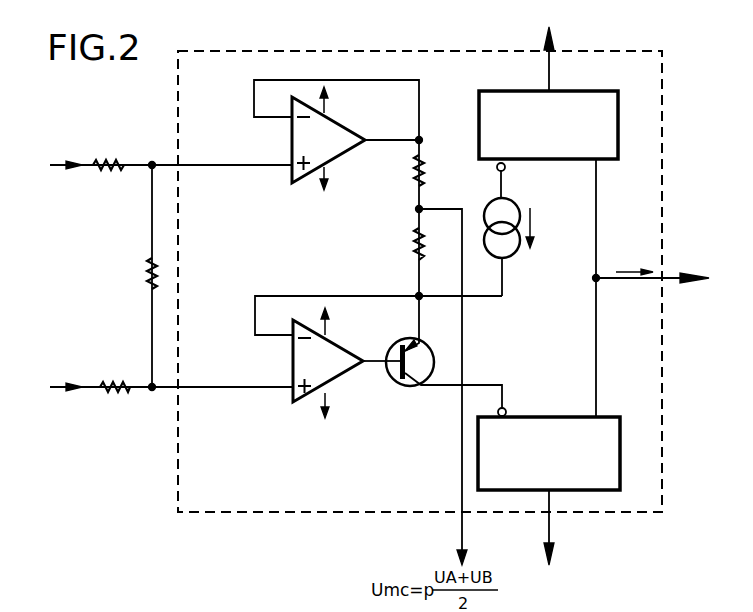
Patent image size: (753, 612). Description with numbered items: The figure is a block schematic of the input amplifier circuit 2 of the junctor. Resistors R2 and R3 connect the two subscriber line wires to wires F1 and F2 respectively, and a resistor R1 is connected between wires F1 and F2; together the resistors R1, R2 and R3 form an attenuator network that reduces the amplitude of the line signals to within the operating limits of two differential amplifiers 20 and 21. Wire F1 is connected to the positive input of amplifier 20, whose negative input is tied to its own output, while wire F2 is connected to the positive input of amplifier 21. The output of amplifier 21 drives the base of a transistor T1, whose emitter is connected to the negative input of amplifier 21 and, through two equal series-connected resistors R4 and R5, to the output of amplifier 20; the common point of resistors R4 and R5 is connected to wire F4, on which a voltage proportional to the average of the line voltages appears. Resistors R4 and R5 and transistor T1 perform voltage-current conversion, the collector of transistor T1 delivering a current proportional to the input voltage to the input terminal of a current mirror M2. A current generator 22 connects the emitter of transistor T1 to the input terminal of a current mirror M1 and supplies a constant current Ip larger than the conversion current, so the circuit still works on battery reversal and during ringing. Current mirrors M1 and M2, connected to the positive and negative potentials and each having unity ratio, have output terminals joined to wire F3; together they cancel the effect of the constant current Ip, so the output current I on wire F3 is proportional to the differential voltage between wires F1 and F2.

The input amplifier circuit 2 is at (662, 211).
The resistor R1 is at (152, 274).
The resistor R2 is at (112, 162).
The resistor R3 is at (116, 385).
The resistor R4 is at (418, 255).
The resistor R5 is at (418, 172).
The wire F1 is at (238, 164).
The wire F2 is at (237, 386).
The wire F3 is at (676, 277).
The wire F4 is at (462, 516).
The differential amplifier 20 is at (338, 133).
The differential amplifier 21 is at (328, 358).
The current generator 22 is at (520, 260).
The transistor T1 is at (421, 386).
The current mirror M1 is at (503, 113).
The current mirror M2 is at (552, 428).
The constant current Ip is at (539, 228).
The output current I is at (634, 263).